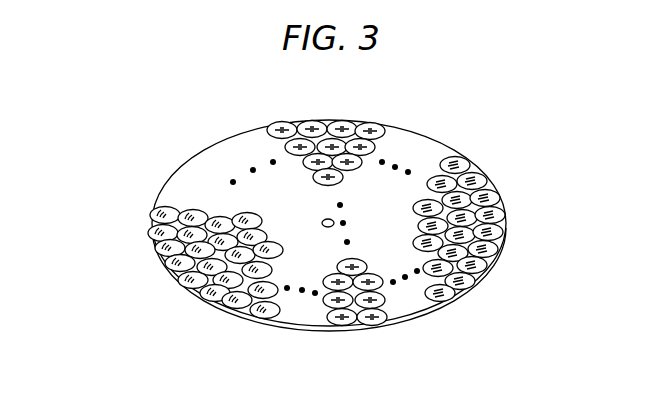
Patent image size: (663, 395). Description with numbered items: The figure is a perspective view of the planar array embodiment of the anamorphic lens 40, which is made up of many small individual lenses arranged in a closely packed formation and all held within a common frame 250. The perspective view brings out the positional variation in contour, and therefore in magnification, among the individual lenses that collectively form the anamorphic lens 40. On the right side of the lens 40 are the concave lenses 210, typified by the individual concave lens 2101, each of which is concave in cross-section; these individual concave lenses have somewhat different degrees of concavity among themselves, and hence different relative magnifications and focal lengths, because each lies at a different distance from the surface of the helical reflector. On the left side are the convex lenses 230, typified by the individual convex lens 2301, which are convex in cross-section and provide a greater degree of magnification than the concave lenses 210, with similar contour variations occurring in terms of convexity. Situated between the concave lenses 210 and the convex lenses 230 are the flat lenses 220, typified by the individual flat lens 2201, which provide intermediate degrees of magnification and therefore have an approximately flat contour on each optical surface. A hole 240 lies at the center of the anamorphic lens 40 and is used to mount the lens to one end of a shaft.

The anamorphic lens 40 is at (498, 184).
The concave lenses 210 is at (462, 202).
The lens 210₁ 2101 is at (482, 267).
The flat lenses 220 is at (268, 228).
The lens 220₁ 2201 is at (347, 320).
The convex lenses 230 is at (172, 219).
The lens 230₁ 2301 is at (196, 204).
The hole 240 is at (335, 222).
The common frame 250 is at (413, 302).